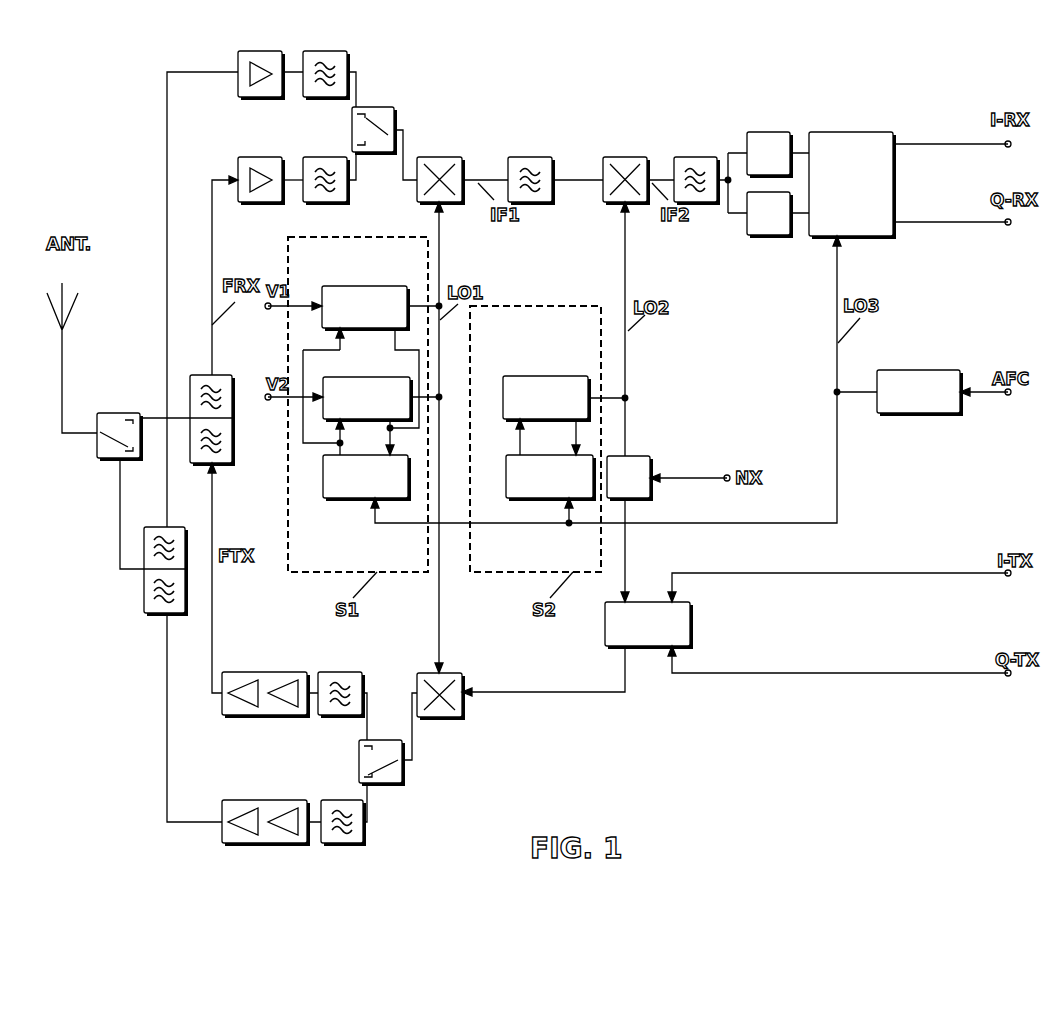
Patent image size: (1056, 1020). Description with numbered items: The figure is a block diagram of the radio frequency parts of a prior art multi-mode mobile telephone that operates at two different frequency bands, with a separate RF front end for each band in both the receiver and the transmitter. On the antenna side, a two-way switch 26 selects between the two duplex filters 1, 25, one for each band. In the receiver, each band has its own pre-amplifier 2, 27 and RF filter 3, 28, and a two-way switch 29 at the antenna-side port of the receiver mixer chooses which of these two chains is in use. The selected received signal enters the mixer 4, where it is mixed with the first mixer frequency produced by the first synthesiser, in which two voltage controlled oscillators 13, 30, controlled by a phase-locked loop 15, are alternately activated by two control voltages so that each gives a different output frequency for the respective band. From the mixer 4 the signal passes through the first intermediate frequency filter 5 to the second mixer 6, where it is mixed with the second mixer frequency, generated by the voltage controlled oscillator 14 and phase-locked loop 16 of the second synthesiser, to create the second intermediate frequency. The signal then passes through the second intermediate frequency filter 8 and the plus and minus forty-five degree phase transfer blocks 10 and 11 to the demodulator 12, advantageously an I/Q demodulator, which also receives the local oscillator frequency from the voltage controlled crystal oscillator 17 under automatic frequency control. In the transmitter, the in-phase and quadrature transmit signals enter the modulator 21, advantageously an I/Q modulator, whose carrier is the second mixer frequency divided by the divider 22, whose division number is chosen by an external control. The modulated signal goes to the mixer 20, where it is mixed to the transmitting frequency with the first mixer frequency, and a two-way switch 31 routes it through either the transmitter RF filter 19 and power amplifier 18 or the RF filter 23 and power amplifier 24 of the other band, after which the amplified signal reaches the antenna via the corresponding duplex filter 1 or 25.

The duplex filter 1 is at (232, 385).
The pre-amplifier 2 is at (252, 157).
The RF filter 3 is at (333, 202).
The mixer 4 is at (445, 162).
The first intermediate frequency filter 5 is at (535, 162).
The second mixer 6 is at (628, 162).
The second intermediate frequency filter 8 is at (695, 157).
The +45° phase transfer block 10 is at (768, 132).
The −45° phase transfer block 11 is at (773, 237).
The demodulator 12 is at (868, 132).
The voltage controlled oscillator 13 is at (350, 375).
The voltage controlled oscillator 14 is at (528, 375).
The phase-locked loop 15 is at (335, 500).
The phase-locked loop 16 is at (506, 470).
The voltage controlled crystal oscillator 17 is at (915, 370).
The power amplifier 18 is at (280, 672).
The RF filter 19 is at (355, 672).
The mixer 20 is at (450, 673).
The modulator 21 is at (690, 630).
The divider 22 is at (650, 458).
The RF filter 23 is at (352, 845).
The power amplifier 24 is at (275, 800).
The duplex filter 25 is at (144, 590).
The two-way switch 26 is at (112, 413).
The pre-amplifier 27 is at (255, 51).
The RF filter 28 is at (315, 51).
The two-way switch 29 is at (378, 107).
The voltage controlled oscillator 30 is at (350, 285).
The two-way switch 31 is at (402, 780).